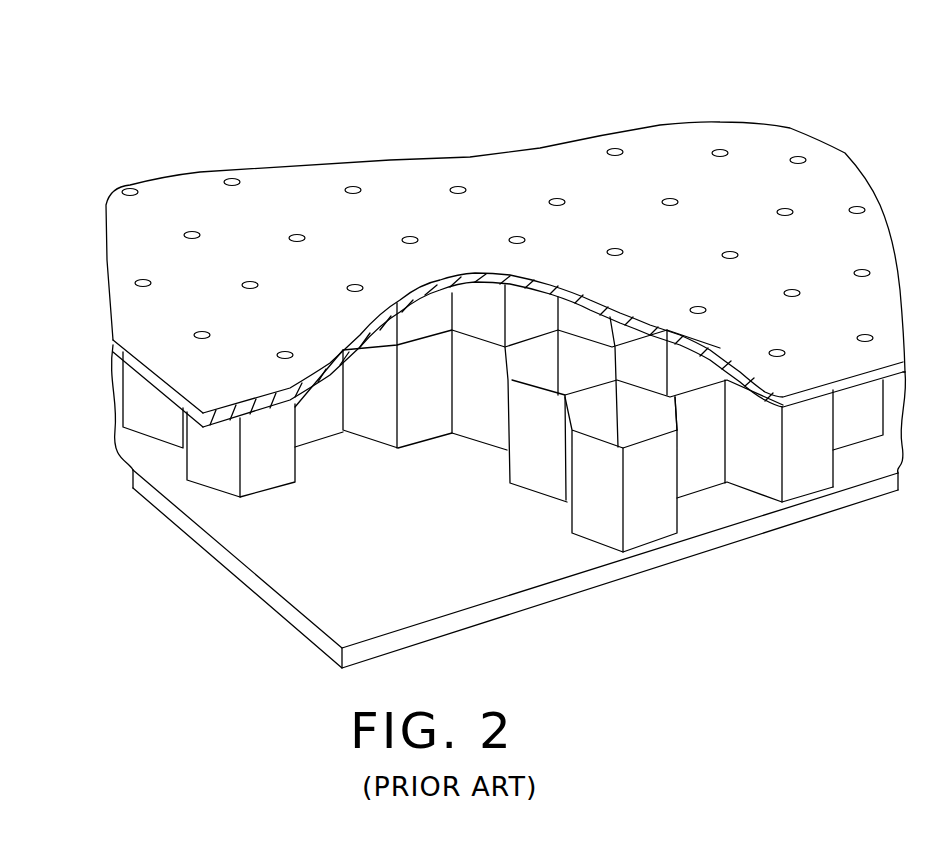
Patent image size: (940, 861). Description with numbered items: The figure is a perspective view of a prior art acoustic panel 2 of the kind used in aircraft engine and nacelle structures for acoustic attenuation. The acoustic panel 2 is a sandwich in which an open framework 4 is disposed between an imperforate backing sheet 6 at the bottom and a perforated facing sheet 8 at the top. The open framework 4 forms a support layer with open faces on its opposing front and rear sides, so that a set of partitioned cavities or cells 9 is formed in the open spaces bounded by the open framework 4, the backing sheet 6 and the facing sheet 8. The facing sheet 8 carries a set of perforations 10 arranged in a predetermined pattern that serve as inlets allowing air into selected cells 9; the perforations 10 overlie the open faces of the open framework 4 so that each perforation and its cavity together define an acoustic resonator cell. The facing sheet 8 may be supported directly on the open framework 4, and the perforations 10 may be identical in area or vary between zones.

The acoustic panel 2 is at (222, 90).
The open framework 4 is at (509, 459).
The imperforate backing sheet 6 is at (417, 645).
The facing sheet 8 is at (505, 274).
The cells 9 is at (547, 470).
The perforations 10 is at (462, 190).